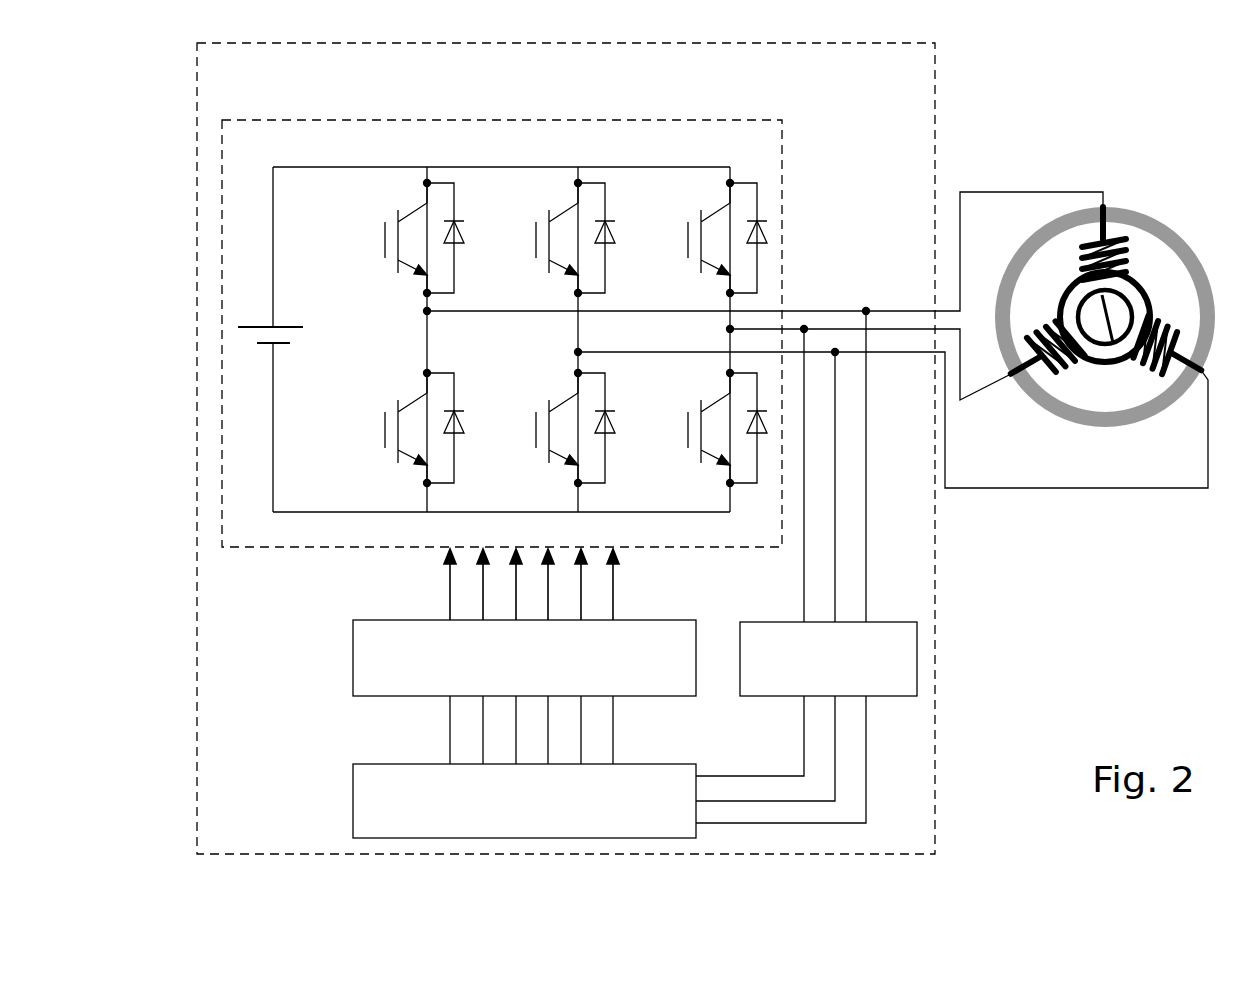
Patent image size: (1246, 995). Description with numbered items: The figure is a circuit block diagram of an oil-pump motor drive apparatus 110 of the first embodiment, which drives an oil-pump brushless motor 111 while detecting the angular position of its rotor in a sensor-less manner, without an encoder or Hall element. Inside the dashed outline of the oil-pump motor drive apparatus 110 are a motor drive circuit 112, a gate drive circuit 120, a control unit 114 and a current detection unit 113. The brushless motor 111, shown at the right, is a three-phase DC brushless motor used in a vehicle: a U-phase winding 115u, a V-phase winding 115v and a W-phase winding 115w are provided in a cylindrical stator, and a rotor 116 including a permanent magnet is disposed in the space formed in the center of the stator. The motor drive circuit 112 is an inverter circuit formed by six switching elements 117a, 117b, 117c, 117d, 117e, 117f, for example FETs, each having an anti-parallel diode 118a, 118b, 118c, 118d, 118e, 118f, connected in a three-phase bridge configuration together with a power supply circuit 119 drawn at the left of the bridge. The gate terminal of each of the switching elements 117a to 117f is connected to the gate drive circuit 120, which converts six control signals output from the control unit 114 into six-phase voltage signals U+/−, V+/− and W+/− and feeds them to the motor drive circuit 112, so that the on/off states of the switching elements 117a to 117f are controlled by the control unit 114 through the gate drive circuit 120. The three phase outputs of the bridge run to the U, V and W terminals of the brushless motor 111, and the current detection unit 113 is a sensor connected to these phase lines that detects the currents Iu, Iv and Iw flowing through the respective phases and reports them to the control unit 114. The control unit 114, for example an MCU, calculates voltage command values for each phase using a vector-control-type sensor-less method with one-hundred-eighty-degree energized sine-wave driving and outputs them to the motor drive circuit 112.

The oil-pump motor drive apparatus 110 is at (197, 72).
The brushless motor 111 is at (1153, 202).
The motor drive circuit 112 is at (782, 140).
The current detection unit 113 is at (892, 620).
The control unit 114 is at (655, 762).
The U-phase winding 115u is at (1127, 257).
The V-phase winding 115v is at (1147, 370).
The W-phase winding 115w is at (1040, 337).
The rotor 116 is at (1103, 332).
The switching element 117a is at (390, 222).
The switching element 117b is at (392, 404).
The switching element 117c is at (541, 222).
The switching element 117d is at (542, 404).
The switching element 117e is at (697, 222).
The switching element 117f is at (693, 418).
The anti-parallel diode 118a is at (459, 243).
The anti-parallel diode 118b is at (459, 433).
The anti-parallel diode 118c is at (610, 243).
The anti-parallel diode 118d is at (610, 433).
The anti-parallel diode 118e is at (762, 243).
The anti-parallel diode 118f is at (761, 433).
The power supply circuit 119 is at (305, 331).
The gate drive circuit 120 is at (668, 618).